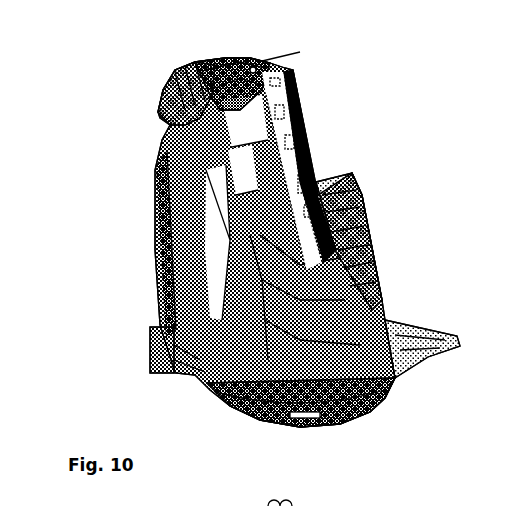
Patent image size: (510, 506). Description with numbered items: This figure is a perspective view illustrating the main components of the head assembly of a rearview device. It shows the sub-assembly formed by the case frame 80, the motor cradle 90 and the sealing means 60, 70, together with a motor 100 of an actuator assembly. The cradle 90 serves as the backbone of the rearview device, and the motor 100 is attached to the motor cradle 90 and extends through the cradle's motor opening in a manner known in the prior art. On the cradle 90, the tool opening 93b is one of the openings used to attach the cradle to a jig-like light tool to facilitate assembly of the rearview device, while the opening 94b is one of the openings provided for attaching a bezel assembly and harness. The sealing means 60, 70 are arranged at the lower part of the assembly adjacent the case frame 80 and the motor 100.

The sealing means 60 is at (150, 350).
The sealing means 70 is at (382, 407).
The case frame 80 is at (157, 238).
The motor cradle 90 is at (300, 52).
The tool opening 93b is at (202, 65).
The opening 94b is at (173, 87).
The motor 100 is at (285, 141).